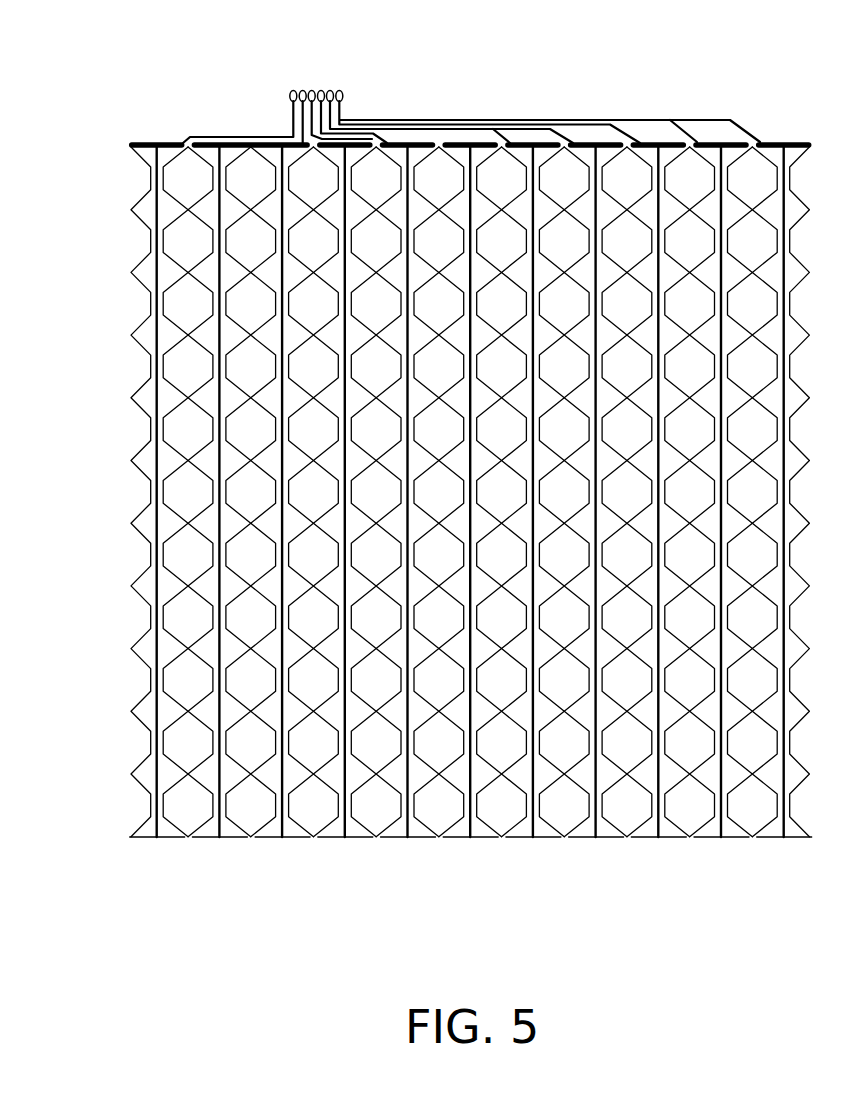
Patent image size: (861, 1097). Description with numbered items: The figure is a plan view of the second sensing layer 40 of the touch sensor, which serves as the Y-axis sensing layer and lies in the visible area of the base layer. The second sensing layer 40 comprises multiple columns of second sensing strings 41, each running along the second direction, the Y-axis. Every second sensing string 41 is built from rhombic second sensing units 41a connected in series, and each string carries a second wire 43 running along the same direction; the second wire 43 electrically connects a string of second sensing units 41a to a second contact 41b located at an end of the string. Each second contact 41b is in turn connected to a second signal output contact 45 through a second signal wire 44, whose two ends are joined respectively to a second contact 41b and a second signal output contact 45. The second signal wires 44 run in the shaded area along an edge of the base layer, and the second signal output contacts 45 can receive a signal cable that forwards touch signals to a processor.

The second sensing layer 40 is at (123, 604).
The second sensing string 41 is at (143, 838).
The second sensing unit 41a is at (147, 216).
The second contact 41b is at (153, 143).
The second wire 43 is at (156, 205).
The second signal wire 44 is at (241, 137).
The second signal output contact 45 is at (291, 93).